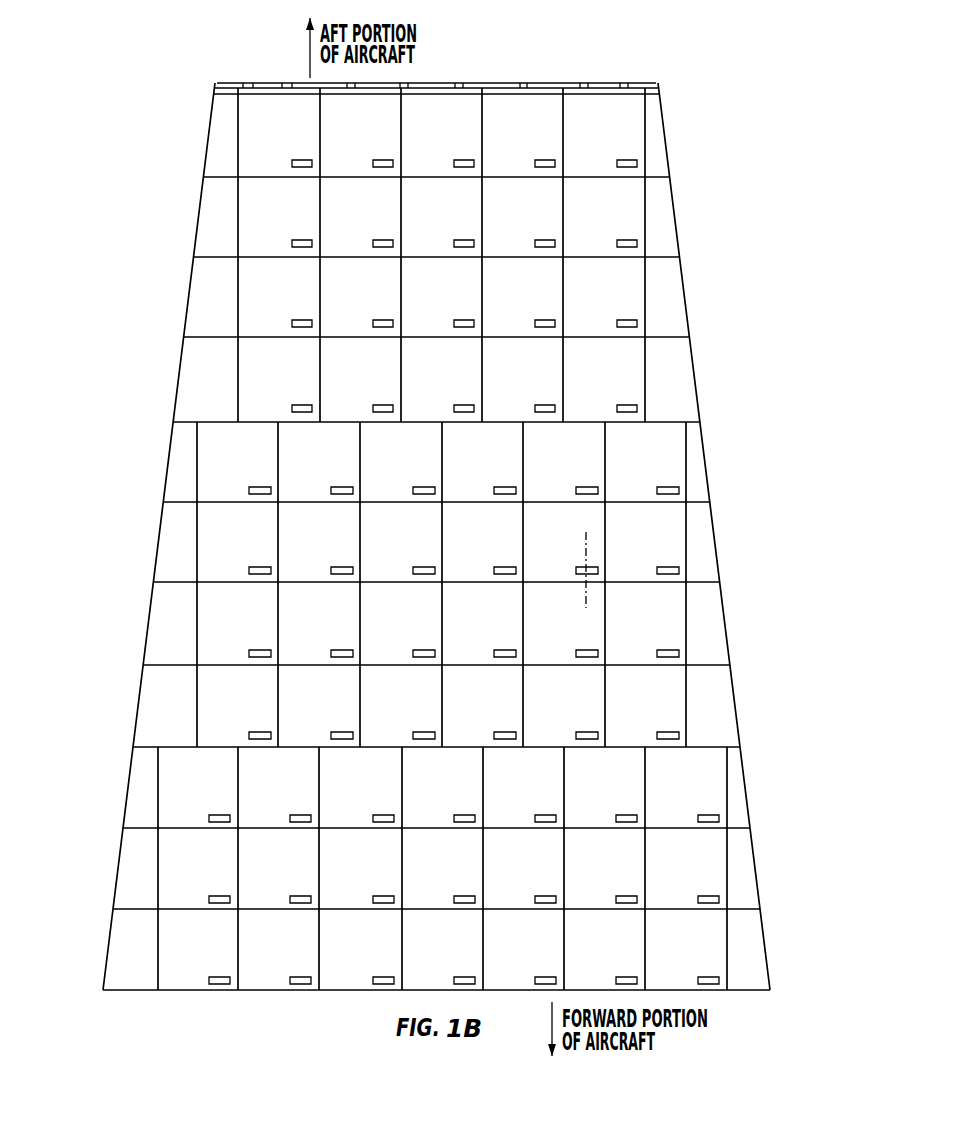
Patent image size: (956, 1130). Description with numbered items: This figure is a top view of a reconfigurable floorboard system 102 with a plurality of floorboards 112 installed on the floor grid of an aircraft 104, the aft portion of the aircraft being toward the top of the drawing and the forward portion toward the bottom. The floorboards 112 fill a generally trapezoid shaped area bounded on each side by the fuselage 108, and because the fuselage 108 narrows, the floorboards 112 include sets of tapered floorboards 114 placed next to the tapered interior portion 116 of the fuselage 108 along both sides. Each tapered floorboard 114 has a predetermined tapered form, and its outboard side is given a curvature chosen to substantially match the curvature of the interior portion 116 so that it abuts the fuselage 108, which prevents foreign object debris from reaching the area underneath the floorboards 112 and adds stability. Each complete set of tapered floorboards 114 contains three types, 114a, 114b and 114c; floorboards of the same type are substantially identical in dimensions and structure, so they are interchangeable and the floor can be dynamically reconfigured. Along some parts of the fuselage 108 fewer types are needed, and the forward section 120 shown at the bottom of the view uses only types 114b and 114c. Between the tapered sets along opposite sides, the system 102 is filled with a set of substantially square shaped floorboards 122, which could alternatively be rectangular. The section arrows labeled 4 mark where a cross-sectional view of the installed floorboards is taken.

The section line 4- 4 is at (618, 608).
The reconfigurable floorboard system 102 is at (115, 503).
The aircraft 104 is at (130, 603).
The fuselage 108 is at (173, 422).
The floorboards 112 is at (223, 1000).
The tapered floorboards 114 is at (172, 290).
The tapered floorboard type 114a is at (178, 378).
The tapered floorboard type 114b is at (191, 272).
The tapered floorboard type 114c is at (203, 178).
The tapered interior portion of the fuselage 116 is at (108, 950).
The forward section of the fuselage 120 is at (95, 836).
The substantially square shaped floorboards 122 is at (700, 957).